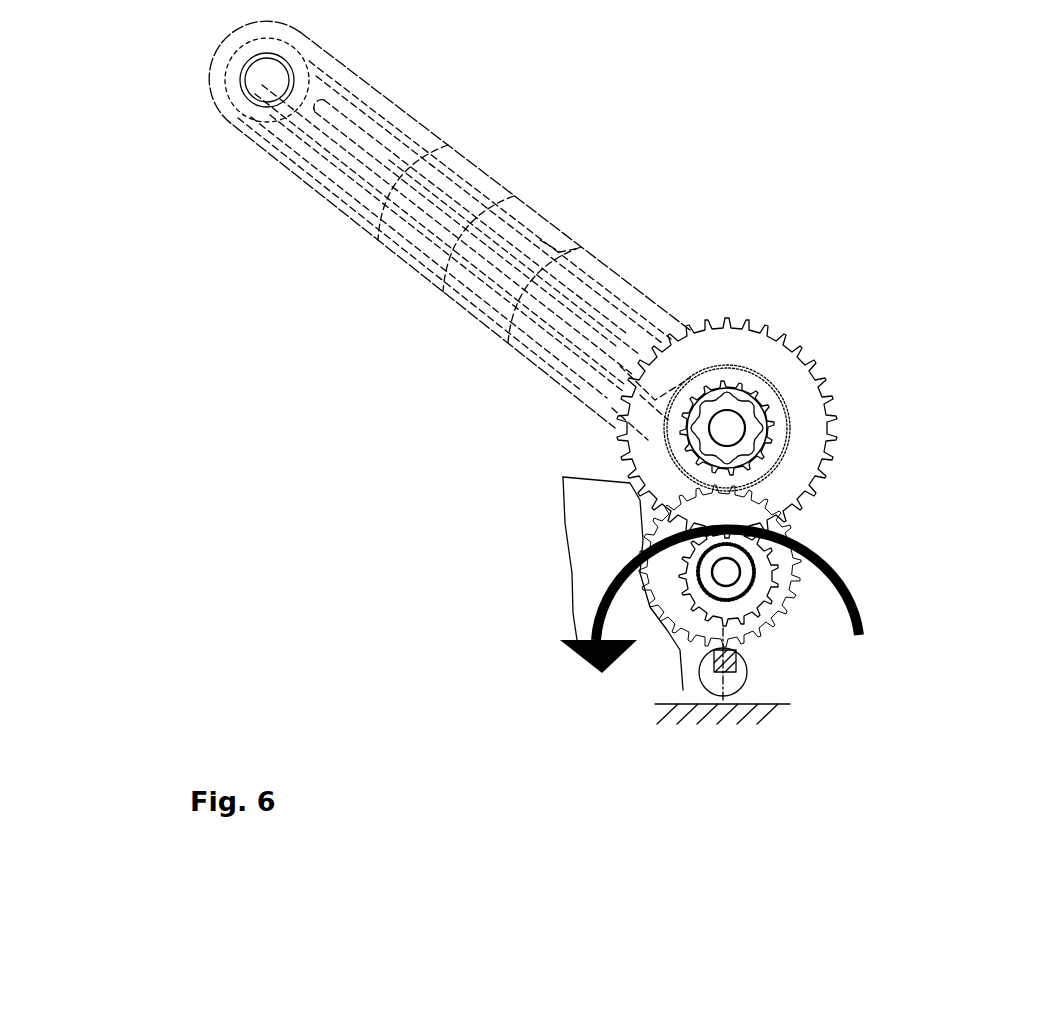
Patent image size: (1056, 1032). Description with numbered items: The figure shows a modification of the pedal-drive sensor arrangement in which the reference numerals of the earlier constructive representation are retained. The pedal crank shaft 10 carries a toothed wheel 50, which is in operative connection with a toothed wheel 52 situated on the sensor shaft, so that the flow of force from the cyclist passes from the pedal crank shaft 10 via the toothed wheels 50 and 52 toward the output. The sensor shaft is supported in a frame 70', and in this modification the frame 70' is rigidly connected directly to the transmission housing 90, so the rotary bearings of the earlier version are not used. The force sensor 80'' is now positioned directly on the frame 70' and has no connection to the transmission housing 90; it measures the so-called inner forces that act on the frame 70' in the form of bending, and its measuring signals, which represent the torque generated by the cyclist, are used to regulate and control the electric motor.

The pedal crank shaft 10 is at (745, 412).
The toothed wheel 50 is at (807, 427).
The toothed wheel 52 is at (753, 573).
The frame 70' is at (686, 633).
The force sensor 80'' is at (658, 672).
The transmission housing 90 is at (743, 712).